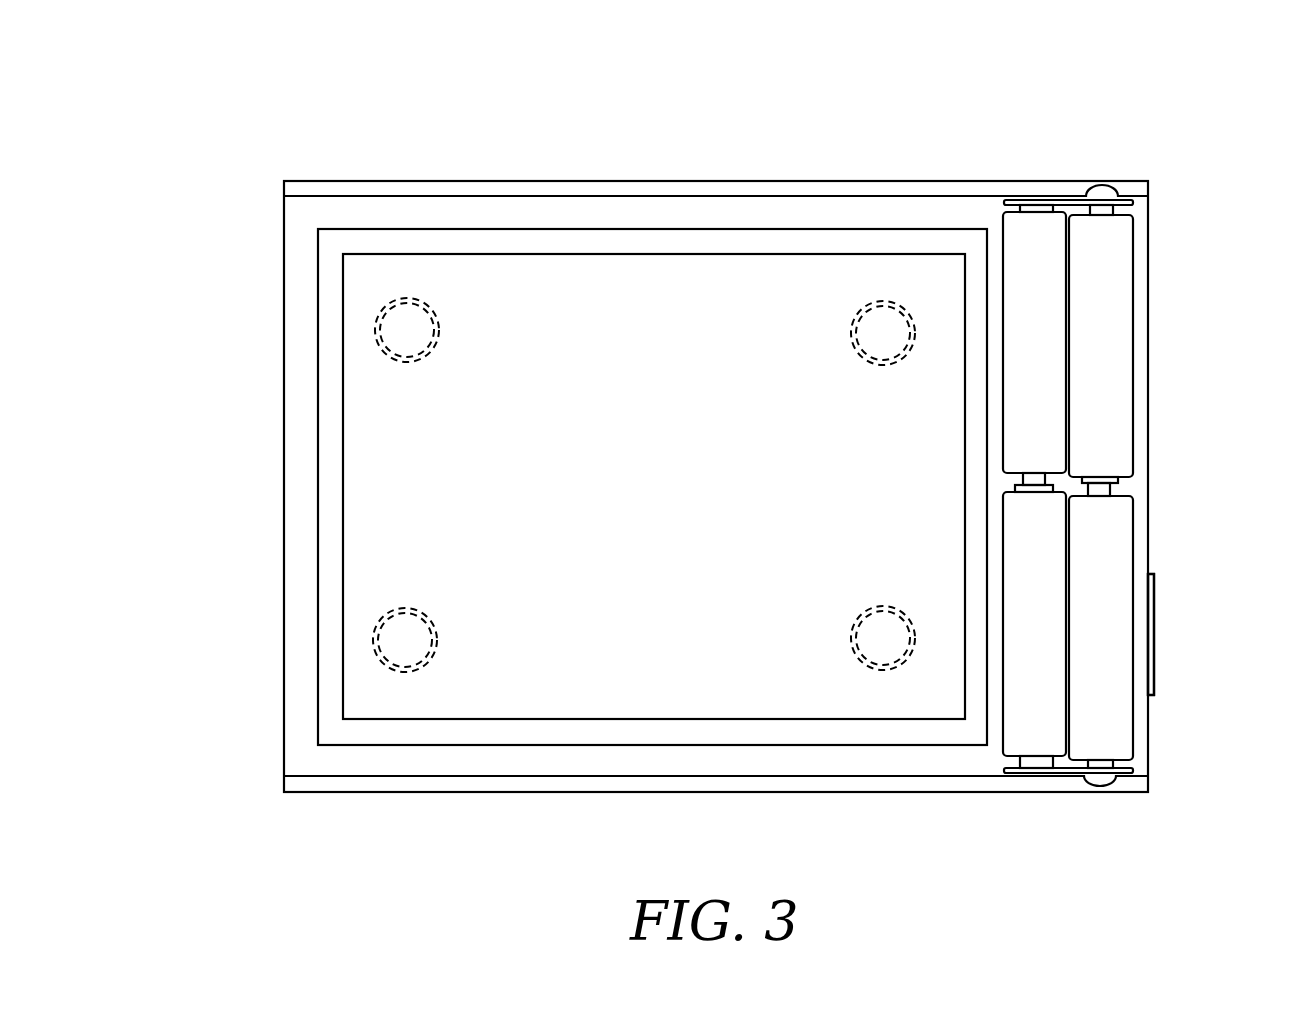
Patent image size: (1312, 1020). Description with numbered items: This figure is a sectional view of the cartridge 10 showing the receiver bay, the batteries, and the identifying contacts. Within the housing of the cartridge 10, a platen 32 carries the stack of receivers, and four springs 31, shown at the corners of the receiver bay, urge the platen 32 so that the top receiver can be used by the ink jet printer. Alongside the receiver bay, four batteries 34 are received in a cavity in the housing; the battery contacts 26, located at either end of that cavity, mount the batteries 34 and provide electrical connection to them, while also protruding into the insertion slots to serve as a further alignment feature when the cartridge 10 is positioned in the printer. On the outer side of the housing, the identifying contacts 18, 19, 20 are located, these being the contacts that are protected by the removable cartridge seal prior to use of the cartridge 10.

The cartridge 10 is at (184, 399).
The identifying contact 18 is at (1152, 613).
The identifying contact 19 is at (1227, 634).
The identifying contact 20 is at (1227, 631).
The battery contacts 26 is at (1102, 196).
The springs 31 is at (432, 355).
The platen 32 is at (585, 254).
The batteries 34 is at (1133, 398).